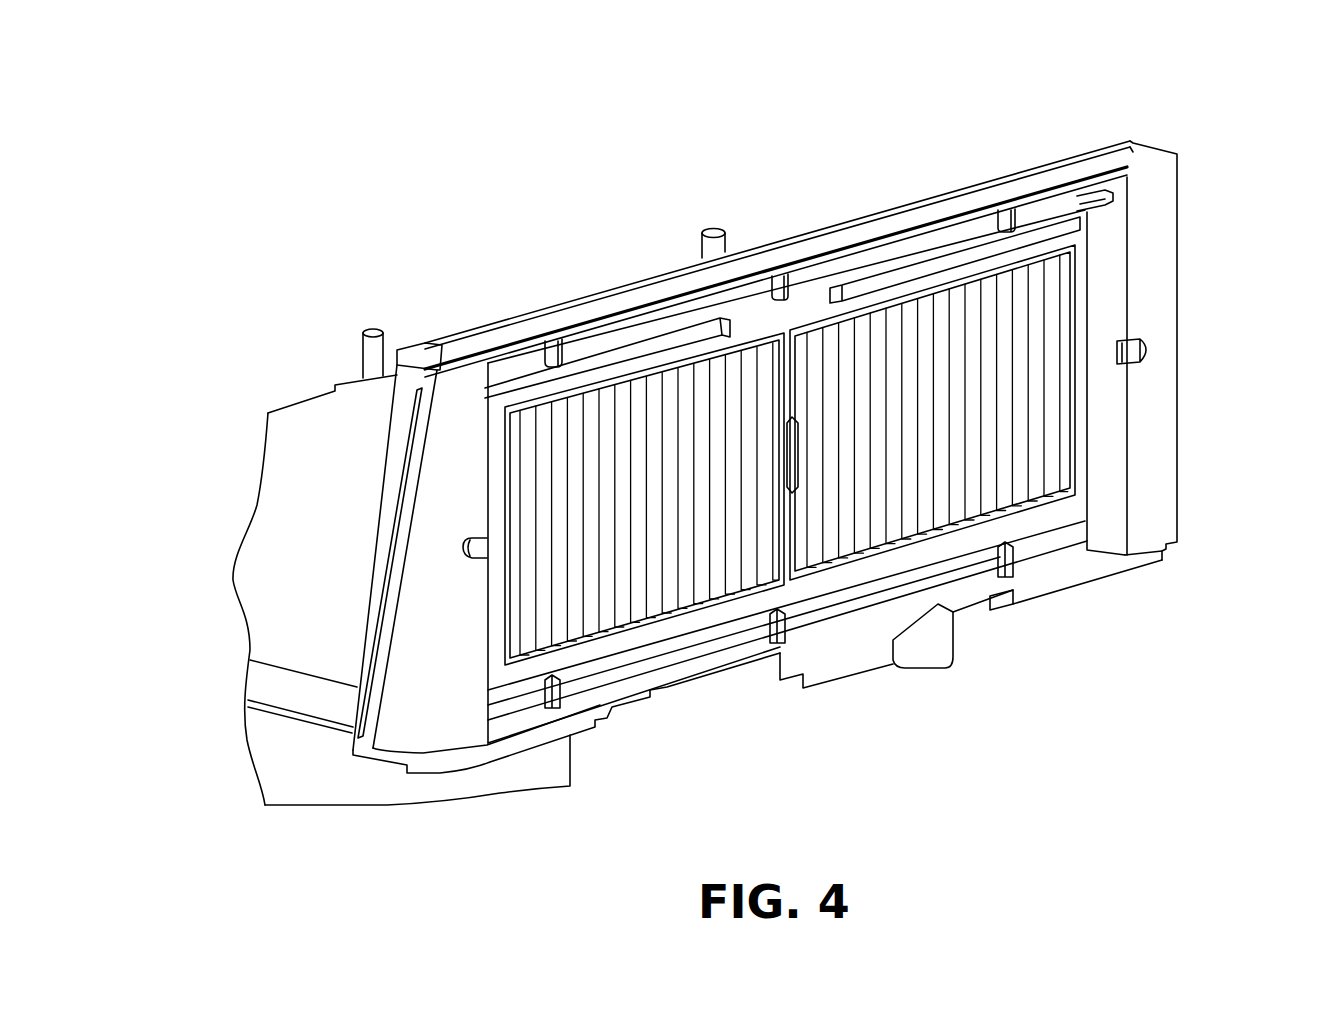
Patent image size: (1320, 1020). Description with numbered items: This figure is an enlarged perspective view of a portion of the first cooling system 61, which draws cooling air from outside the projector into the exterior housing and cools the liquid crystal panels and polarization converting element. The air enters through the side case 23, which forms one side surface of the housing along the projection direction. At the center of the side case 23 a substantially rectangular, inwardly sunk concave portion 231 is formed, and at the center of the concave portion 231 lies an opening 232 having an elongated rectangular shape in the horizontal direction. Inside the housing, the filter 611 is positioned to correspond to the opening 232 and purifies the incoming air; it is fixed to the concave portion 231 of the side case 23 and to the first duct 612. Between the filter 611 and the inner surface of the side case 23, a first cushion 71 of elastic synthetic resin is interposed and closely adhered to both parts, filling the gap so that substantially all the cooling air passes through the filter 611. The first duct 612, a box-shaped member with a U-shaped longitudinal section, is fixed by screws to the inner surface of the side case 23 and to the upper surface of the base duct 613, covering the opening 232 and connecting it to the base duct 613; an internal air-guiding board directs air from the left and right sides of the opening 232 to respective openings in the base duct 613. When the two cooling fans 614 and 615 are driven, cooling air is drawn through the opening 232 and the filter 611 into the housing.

The first cooling system 61 is at (1032, 111).
The side case 23 is at (1160, 173).
The concave portion 231 is at (1113, 390).
The opening 232 is at (1103, 432).
The first cushion 71 is at (630, 337).
The filter 611 is at (920, 320).
The first duct 612 is at (302, 427).
The base duct 613 is at (270, 683).
The cooling fan 614 is at (558, 762).
The cooling fan 615 is at (853, 667).